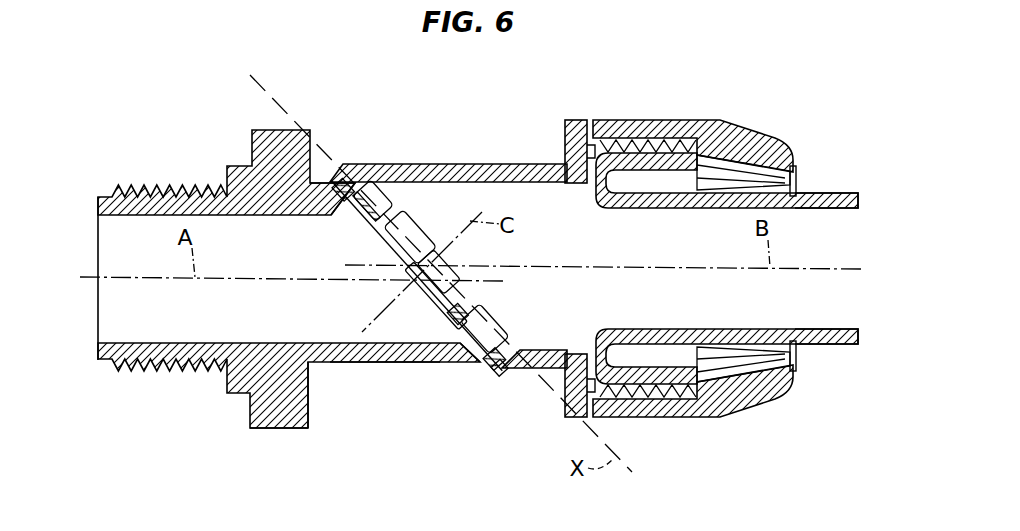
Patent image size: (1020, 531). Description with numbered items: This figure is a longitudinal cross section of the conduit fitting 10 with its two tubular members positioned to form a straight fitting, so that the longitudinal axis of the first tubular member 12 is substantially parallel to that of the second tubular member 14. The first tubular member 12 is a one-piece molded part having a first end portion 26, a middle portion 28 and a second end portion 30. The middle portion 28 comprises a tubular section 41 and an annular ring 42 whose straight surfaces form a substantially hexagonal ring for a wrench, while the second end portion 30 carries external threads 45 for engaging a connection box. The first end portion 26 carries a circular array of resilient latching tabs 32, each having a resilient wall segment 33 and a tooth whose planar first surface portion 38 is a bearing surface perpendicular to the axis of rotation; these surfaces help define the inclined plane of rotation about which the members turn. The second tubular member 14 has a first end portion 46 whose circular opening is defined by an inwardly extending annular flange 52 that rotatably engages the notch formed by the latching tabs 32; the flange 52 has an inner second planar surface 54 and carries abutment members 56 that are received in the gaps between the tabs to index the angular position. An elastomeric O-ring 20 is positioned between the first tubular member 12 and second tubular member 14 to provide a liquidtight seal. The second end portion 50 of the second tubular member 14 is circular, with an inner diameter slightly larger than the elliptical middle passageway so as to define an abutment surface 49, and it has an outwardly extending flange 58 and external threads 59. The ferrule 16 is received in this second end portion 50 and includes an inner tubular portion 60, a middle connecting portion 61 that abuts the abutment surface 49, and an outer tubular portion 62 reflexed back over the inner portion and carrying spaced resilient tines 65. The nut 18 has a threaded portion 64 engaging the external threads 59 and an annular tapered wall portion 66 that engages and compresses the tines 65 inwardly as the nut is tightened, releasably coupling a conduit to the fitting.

The conduit fitting 10 is at (233, 98).
The first tubular member 12 is at (228, 160).
The second tubular member 14 is at (500, 160).
The ferrule 16 is at (832, 192).
The nut 18 is at (758, 126).
The O-ring 20 is at (498, 366).
The first end portion 26 is at (472, 369).
The middle portion 28 is at (278, 434).
The second end portion 30 is at (98, 366).
The latching tab 32 is at (372, 186).
The resilient wall segment 33 is at (378, 230).
The first surface portion 38 is at (452, 312).
The tubular section 41 is at (380, 366).
The annular ring 42 is at (308, 416).
The external threads 45 is at (170, 368).
The first end portion 46 is at (357, 162).
The abutment surface 49 is at (588, 222).
The second end portion 50 is at (574, 117).
The annular flange 52 is at (500, 346).
The second planar surface 54 is at (482, 304).
The abutment member 56 is at (440, 270).
The outwardly extending flange 58 is at (566, 140).
The external threads 59 is at (660, 405).
The inner tubular portion 60 is at (782, 330).
The middle connecting portion 61 is at (592, 346).
The outer tubular portion 62 is at (648, 198).
The threaded portion 64 is at (607, 146).
The resilient tines 65 is at (798, 360).
The annular tapered wall portion 66 is at (797, 170).